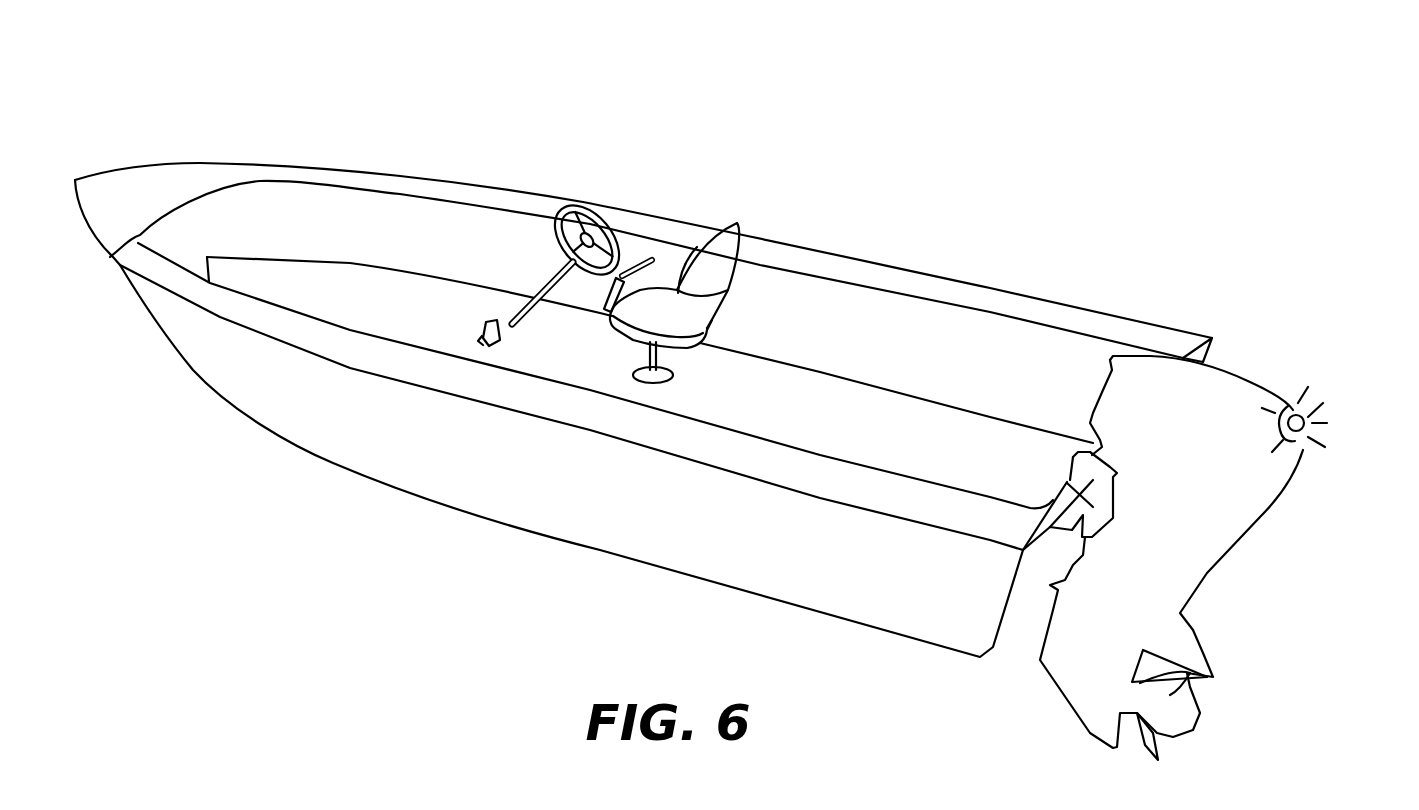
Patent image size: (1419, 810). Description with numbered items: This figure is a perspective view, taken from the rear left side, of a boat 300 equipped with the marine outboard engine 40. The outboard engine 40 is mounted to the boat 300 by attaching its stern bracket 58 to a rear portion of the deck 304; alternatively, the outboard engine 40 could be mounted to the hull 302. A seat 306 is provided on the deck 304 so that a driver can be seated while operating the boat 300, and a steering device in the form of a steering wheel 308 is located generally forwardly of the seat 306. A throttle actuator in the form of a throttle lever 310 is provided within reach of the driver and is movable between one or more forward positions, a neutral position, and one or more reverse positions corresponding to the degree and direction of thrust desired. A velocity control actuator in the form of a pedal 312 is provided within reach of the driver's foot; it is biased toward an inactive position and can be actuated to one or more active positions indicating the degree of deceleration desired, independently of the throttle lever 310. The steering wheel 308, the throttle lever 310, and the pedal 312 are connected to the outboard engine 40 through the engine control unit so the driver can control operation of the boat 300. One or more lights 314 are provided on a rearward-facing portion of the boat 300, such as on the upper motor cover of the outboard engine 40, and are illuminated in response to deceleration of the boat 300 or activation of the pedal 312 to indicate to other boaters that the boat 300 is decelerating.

The boat 300 is at (293, 136).
The hull 302 is at (288, 423).
The deck 304 is at (857, 423).
The seat 306 is at (737, 250).
The steering wheel 308 is at (583, 201).
The throttle lever 310 is at (657, 253).
The pedal 312 is at (492, 322).
The lights 314 is at (1292, 392).
The outboard engine 40 is at (1342, 392).
The stern bracket 58 is at (1070, 480).